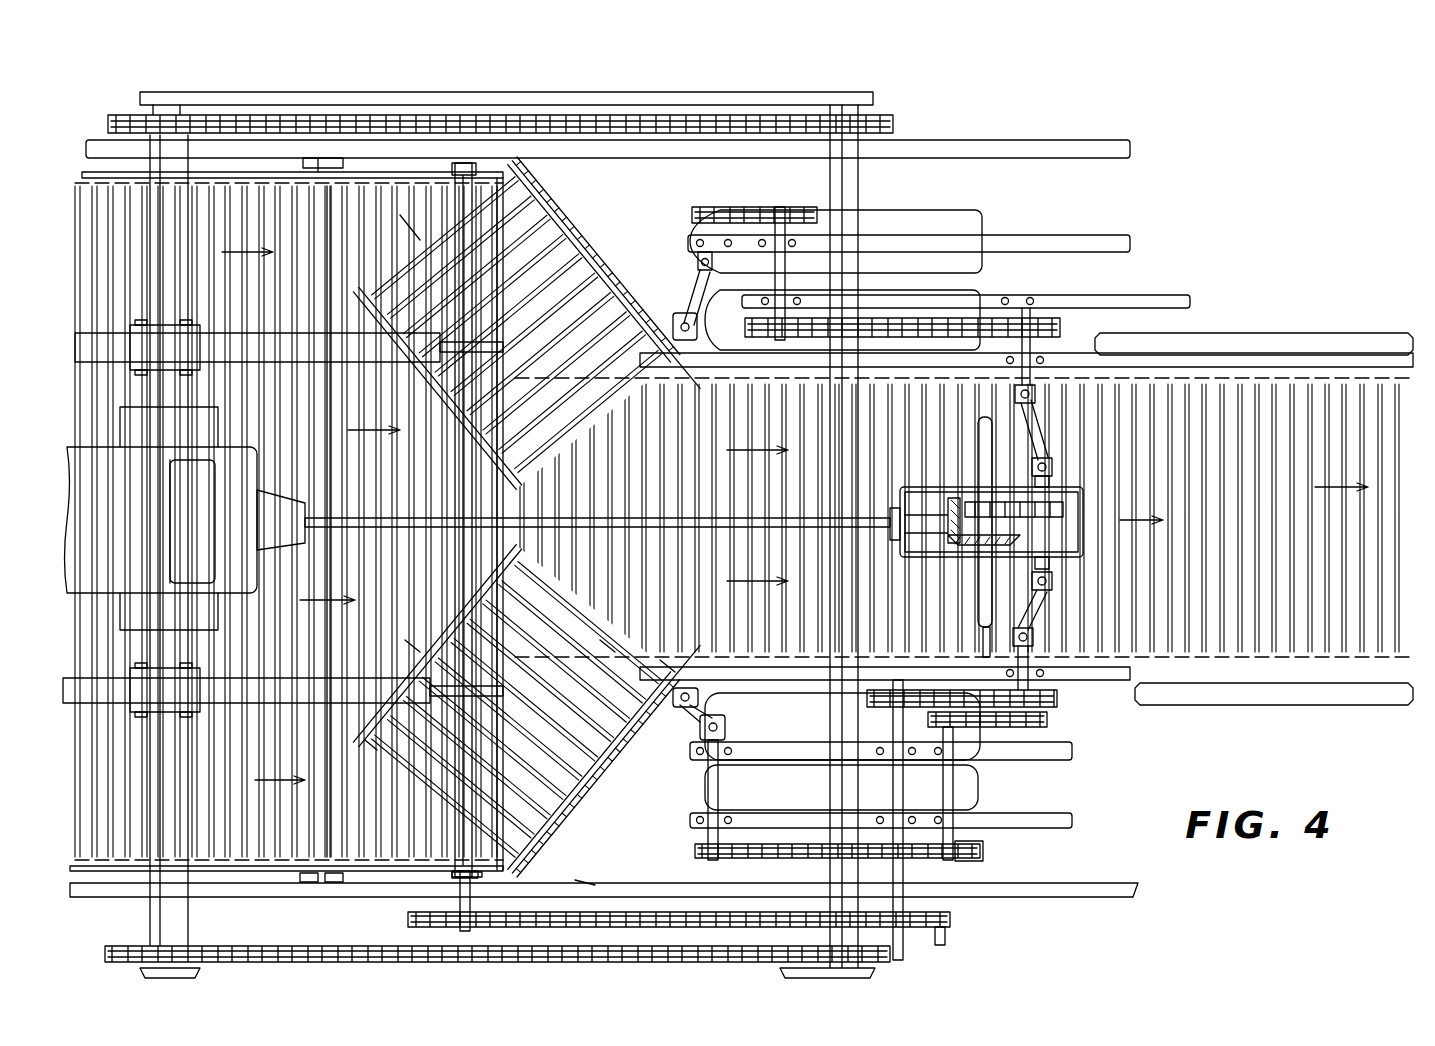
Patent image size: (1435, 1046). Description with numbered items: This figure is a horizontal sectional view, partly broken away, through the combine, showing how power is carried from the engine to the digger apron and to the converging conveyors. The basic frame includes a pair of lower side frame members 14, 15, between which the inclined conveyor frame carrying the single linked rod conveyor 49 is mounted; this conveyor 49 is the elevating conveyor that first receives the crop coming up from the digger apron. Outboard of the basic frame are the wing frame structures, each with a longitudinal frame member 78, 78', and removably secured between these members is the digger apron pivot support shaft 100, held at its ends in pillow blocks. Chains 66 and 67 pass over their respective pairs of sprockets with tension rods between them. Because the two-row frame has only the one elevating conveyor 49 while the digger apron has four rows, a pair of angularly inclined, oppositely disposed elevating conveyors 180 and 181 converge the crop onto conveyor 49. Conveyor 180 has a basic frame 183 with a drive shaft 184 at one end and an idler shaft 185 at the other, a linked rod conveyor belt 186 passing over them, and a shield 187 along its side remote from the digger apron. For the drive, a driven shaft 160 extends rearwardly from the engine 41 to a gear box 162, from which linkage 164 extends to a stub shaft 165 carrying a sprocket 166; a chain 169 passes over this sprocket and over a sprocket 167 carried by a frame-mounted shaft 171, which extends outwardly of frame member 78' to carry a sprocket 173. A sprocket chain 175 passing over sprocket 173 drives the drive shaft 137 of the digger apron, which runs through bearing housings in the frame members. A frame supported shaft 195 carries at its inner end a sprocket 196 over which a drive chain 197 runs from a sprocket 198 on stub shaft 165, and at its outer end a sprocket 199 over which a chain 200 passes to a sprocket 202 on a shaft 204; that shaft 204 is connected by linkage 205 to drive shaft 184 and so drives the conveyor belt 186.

The lower side frame member 14 is at (1335, 680).
The lower side frame member 15 is at (1195, 355).
The engine 41 is at (100, 552).
The linked rod conveyor 49 is at (1310, 395).
The chain 66 is at (548, 120).
The chain 67 is at (323, 943).
The longitudinal frame member 78 is at (608, 129).
The longitudinal frame member 78' is at (632, 904).
The digger apron pivot support shaft 100 is at (290, 875).
The drive shaft 137 is at (463, 905).
The driven shaft 160 is at (745, 498).
The gear box 162 is at (932, 487).
The linkage 164 is at (1037, 617).
The stub shaft 165 is at (1040, 725).
The sprocket 166 is at (1050, 690).
The sprocket 167 is at (875, 690).
The chain 169 is at (938, 690).
The shaft 171 is at (990, 905).
The sprocket 173 is at (940, 932).
The sprocket chain 175 is at (599, 870).
The elevating conveyor 180 is at (442, 596).
The elevating conveyor 181 is at (419, 211).
The frame 183 is at (413, 648).
The drive shaft 184 is at (673, 657).
The idler shaft 185 is at (372, 742).
The linked rod conveyor belt 186 is at (613, 633).
The shield 187 is at (607, 233).
The frame supported shaft 195 is at (985, 790).
The sprocket 196 is at (933, 723).
The drive chain 197 is at (1000, 723).
The sprocket 198 is at (1047, 700).
The sprocket 199 is at (973, 855).
The chain 200 is at (745, 858).
The sprocket 202 is at (713, 843).
The shaft 204 is at (720, 797).
The linkage 205 is at (712, 700).